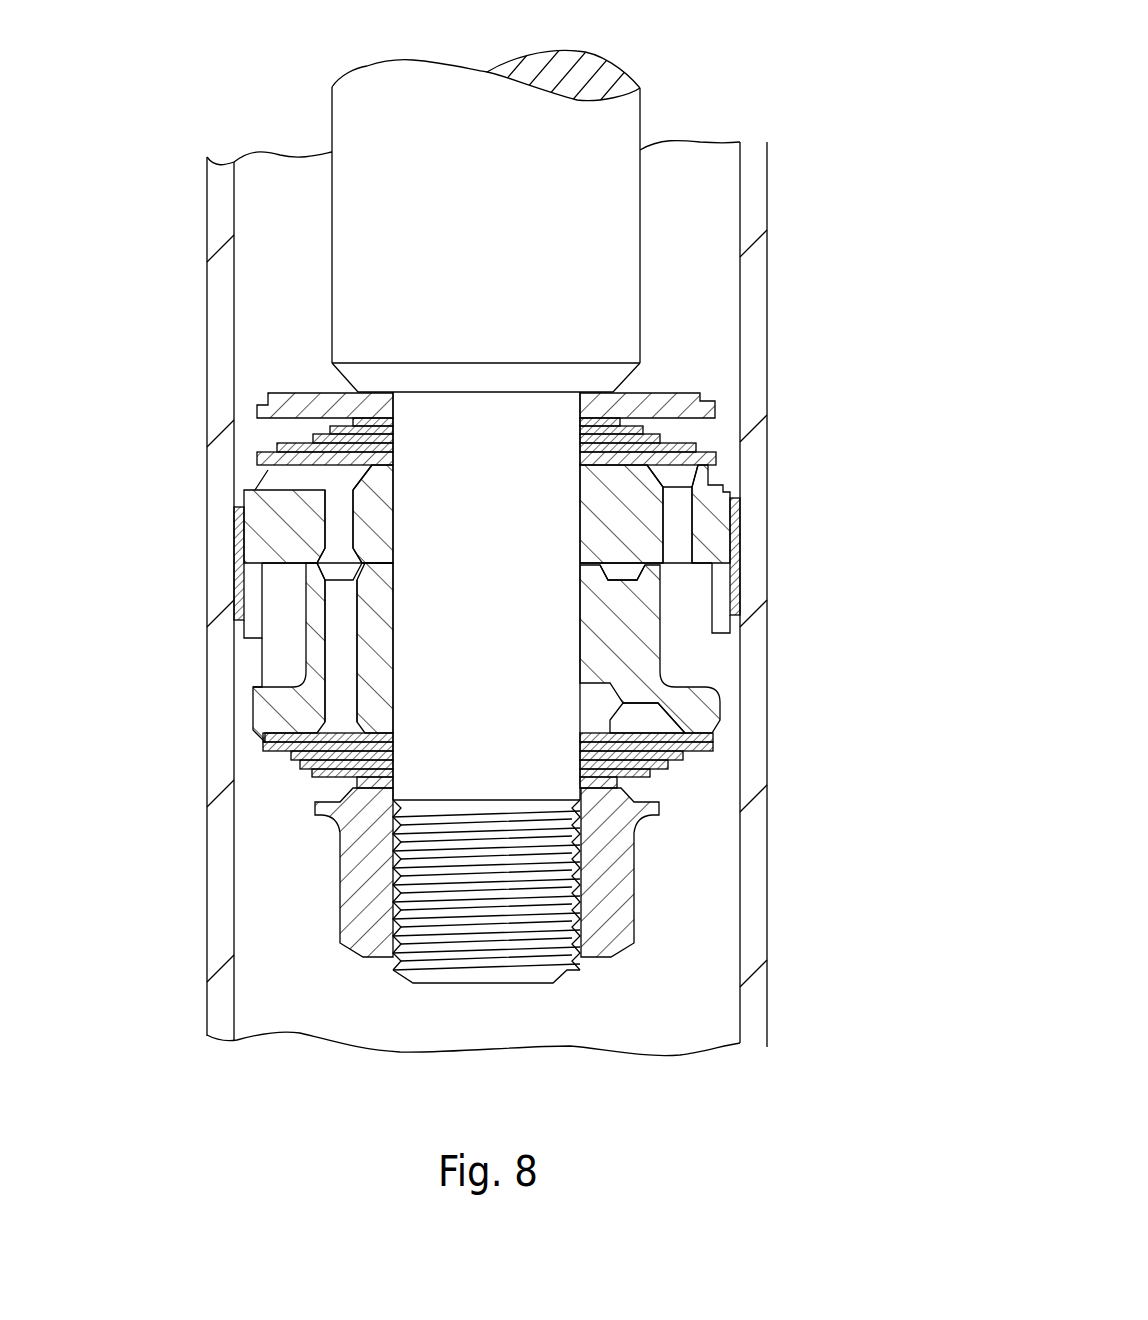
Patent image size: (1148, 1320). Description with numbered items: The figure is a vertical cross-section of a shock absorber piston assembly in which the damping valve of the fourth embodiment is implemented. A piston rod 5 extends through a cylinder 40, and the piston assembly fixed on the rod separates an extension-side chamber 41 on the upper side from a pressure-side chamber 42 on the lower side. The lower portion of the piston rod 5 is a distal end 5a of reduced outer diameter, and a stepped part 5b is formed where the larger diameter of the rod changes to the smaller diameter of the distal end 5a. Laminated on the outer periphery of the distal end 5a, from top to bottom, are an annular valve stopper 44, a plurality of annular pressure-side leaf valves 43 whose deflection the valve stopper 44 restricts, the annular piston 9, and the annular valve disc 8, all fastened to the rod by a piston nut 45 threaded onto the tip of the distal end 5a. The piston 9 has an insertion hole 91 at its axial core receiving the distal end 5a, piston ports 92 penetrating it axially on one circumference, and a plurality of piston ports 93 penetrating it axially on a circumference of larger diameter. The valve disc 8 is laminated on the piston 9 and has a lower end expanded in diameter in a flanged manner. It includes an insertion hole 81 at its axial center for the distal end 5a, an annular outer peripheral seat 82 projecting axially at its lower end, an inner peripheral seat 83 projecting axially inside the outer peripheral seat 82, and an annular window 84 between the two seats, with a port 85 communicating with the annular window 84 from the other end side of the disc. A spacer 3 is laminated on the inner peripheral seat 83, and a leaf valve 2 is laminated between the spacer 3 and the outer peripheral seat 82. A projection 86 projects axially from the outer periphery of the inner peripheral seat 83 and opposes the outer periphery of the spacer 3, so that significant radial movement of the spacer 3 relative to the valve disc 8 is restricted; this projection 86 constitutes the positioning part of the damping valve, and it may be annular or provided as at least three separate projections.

The cylinder 40 is at (207, 262).
The extension-side chamber 41 is at (262, 177).
The pressure-side chamber 42 is at (283, 1005).
The piston rod 5 is at (641, 118).
The distal end 5a is at (565, 698).
The stepped part 5b is at (610, 398).
The valve stopper 44 is at (700, 393).
The pressure-side leaf valves 43 is at (690, 443).
The piston 9 is at (741, 478).
The insertion hole 91 is at (578, 536).
The piston ports 92 is at (330, 514).
The piston ports 93 is at (682, 508).
The valve disc 8 is at (250, 722).
The insertion hole 81 is at (560, 650).
The annular window 84 is at (252, 714).
The port 85 is at (340, 607).
The projection 86 is at (722, 720).
The spacer 3 is at (310, 665).
The leaf valve 2 is at (296, 762).
The outer peripheral seat 82 is at (712, 737).
The inner peripheral seat 83 is at (600, 790).
The piston nut 45 is at (637, 900).